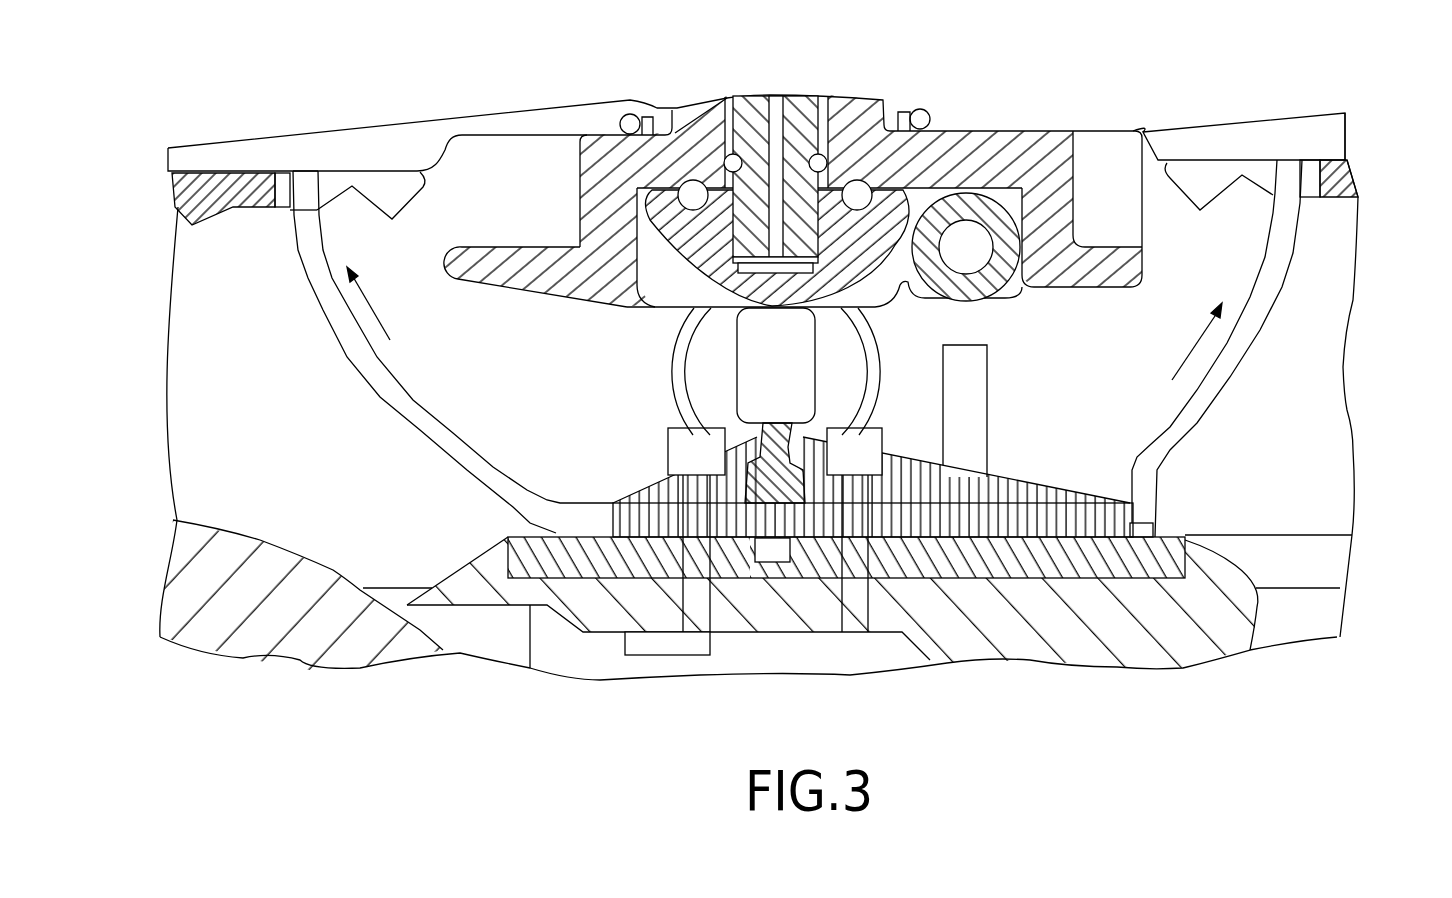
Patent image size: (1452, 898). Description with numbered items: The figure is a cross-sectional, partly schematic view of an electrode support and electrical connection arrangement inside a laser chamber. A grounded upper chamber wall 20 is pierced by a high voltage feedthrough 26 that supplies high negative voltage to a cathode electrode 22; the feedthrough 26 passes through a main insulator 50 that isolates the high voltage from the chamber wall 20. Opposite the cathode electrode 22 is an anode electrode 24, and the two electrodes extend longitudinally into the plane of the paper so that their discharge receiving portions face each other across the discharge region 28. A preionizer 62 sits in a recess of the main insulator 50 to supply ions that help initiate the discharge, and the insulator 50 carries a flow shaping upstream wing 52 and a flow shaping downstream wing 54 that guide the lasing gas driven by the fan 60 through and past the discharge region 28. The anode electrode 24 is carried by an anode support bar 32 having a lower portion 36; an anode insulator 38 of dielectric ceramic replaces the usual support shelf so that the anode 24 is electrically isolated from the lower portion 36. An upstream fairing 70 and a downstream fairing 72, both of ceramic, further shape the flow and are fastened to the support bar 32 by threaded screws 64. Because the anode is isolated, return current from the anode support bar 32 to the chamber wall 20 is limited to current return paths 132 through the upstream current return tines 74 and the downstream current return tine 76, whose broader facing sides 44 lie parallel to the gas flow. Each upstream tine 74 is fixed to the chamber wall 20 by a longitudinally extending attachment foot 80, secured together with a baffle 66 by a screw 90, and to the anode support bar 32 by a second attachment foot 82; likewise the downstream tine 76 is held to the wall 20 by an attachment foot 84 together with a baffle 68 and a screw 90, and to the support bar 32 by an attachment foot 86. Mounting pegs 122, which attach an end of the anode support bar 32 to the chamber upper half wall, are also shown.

The upper chamber wall 20 is at (360, 146).
The cathode electrode 22 is at (680, 270).
The anode electrode 24 is at (795, 458).
The high voltage feedthrough 26 is at (803, 118).
The discharge region 28 is at (720, 378).
The anode support bar 32 is at (1250, 660).
The anode support bar lower portion 36 is at (995, 637).
The anode insulator 38 is at (1200, 533).
The facing sides 44 is at (413, 433).
The main insulator 50 is at (1080, 291).
The flow shaping upstream wing 52 is at (518, 283).
The flow shaping downstream wing 54 is at (1147, 267).
The fan 60 is at (260, 555).
The preionizer 62 is at (997, 295).
The threaded screws 64 is at (665, 448).
The baffle 66 is at (407, 190).
The baffle 68 is at (1203, 180).
The upstream fairing 70 is at (615, 481).
The downstream fairing 72 is at (1030, 480).
The upstream current return tines 74 is at (330, 365).
The downstream current return tine 76 is at (1282, 317).
The attachment foot 80 is at (285, 172).
The attachment foot 82 is at (523, 531).
The attachment foot 84 is at (1320, 157).
The attachment foot 86 is at (1150, 520).
The screw 90 is at (255, 212).
The mounting pegs 122 is at (668, 650).
The current return paths 132 is at (784, 331).